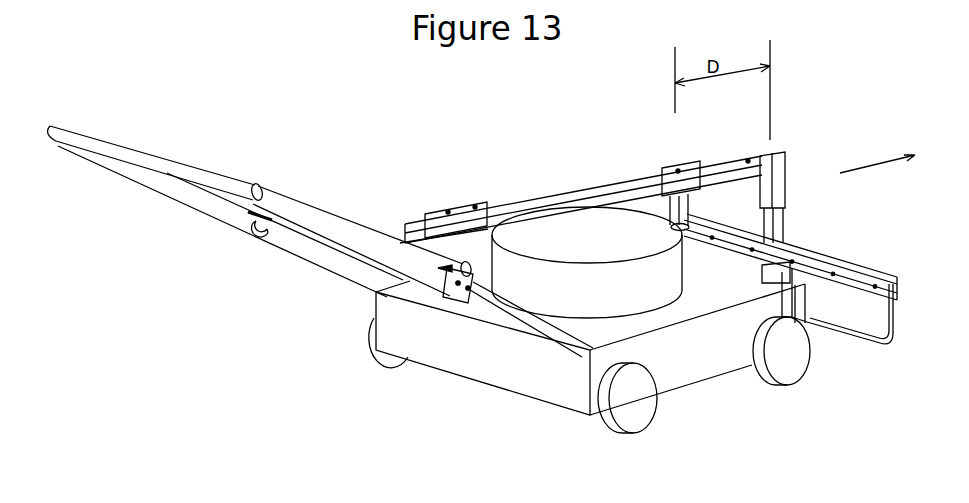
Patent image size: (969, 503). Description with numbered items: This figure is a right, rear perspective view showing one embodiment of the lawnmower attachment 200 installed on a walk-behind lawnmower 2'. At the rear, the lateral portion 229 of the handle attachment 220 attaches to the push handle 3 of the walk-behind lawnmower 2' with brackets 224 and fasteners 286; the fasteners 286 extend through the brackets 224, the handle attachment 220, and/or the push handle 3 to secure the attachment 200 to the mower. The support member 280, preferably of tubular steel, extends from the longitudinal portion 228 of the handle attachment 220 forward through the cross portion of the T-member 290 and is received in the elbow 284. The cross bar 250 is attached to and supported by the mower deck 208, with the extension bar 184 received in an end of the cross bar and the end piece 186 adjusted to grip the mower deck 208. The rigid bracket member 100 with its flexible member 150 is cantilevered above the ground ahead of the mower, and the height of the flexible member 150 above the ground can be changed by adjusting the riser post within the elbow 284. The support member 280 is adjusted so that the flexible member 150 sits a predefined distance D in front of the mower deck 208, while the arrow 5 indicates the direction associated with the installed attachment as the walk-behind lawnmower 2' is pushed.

The push handle 3 is at (153, 162).
The handle attachment 220 is at (358, 210).
The lateral portion 229 is at (422, 252).
The longitudinal portion 228 is at (407, 222).
The lawnmower attachment 200 is at (596, 178).
The support member 280 is at (632, 190).
The T-member 290 is at (690, 172).
The elbow 284 is at (768, 165).
The direction of travel 5 is at (889, 166).
The cross bar 250 is at (730, 265).
The rigid bracket member 100 is at (858, 272).
The extension bar 184 is at (776, 270).
The end piece 186 is at (788, 305).
The flexible member 150 is at (888, 325).
The bracket 224 is at (457, 288).
The fasteners 286 is at (468, 291).
The mower deck 208 is at (680, 374).
The walk-behind lawnmower 2' is at (586, 381).